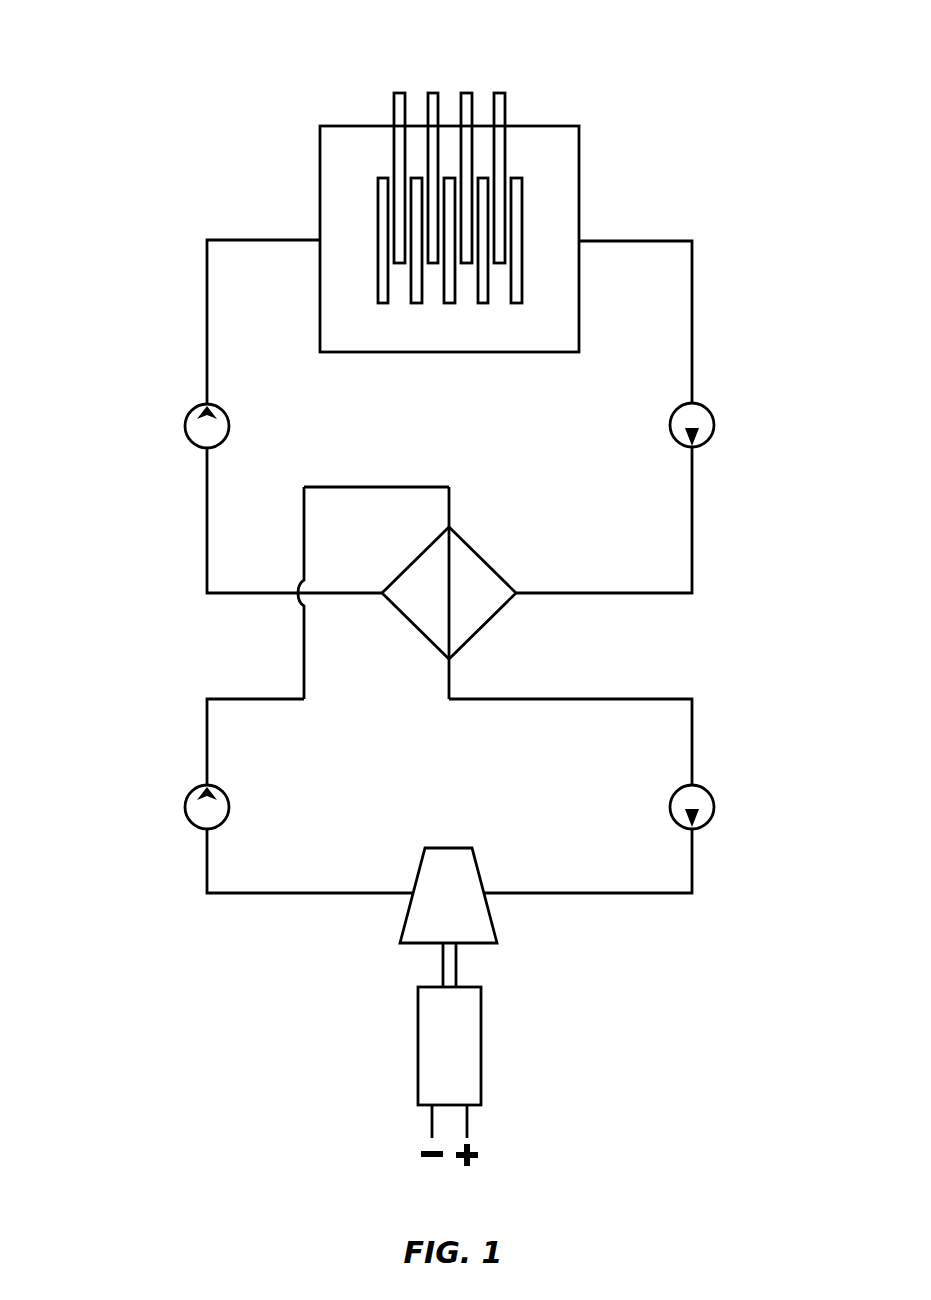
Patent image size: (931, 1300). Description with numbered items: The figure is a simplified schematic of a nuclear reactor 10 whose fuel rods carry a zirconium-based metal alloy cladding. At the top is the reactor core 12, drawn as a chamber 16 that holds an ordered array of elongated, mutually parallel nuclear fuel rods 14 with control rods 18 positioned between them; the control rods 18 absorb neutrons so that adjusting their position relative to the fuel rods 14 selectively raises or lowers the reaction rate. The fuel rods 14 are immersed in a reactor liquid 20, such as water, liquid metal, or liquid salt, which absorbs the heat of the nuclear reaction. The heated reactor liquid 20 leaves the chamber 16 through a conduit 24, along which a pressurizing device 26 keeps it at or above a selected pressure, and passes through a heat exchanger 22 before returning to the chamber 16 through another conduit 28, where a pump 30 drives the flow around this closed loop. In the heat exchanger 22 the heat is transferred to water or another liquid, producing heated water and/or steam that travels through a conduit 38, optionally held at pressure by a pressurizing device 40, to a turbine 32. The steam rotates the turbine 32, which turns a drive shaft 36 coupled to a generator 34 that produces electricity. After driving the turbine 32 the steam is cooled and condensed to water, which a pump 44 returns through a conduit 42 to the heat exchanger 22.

The nuclear reactor 10 is at (148, 118).
The reactor core 12 is at (630, 138).
The nuclear fuel rods 14 is at (383, 303).
The chamber 16 is at (579, 199).
The control rods 18 is at (500, 93).
The reactor liquid 20 is at (353, 195).
The heat exchanger 22 is at (500, 553).
The conduit 24 is at (692, 325).
The pressurizing device 26 is at (714, 429).
The conduit 28 is at (207, 323).
The pump 30 is at (185, 422).
The turbine 32 is at (494, 918).
The generator 34 is at (481, 1037).
The drive shaft 36 is at (456, 962).
The conduit 38 is at (590, 698).
The pressurizing device 40 is at (714, 809).
The conduit 42 is at (262, 698).
The pump 44 is at (185, 808).